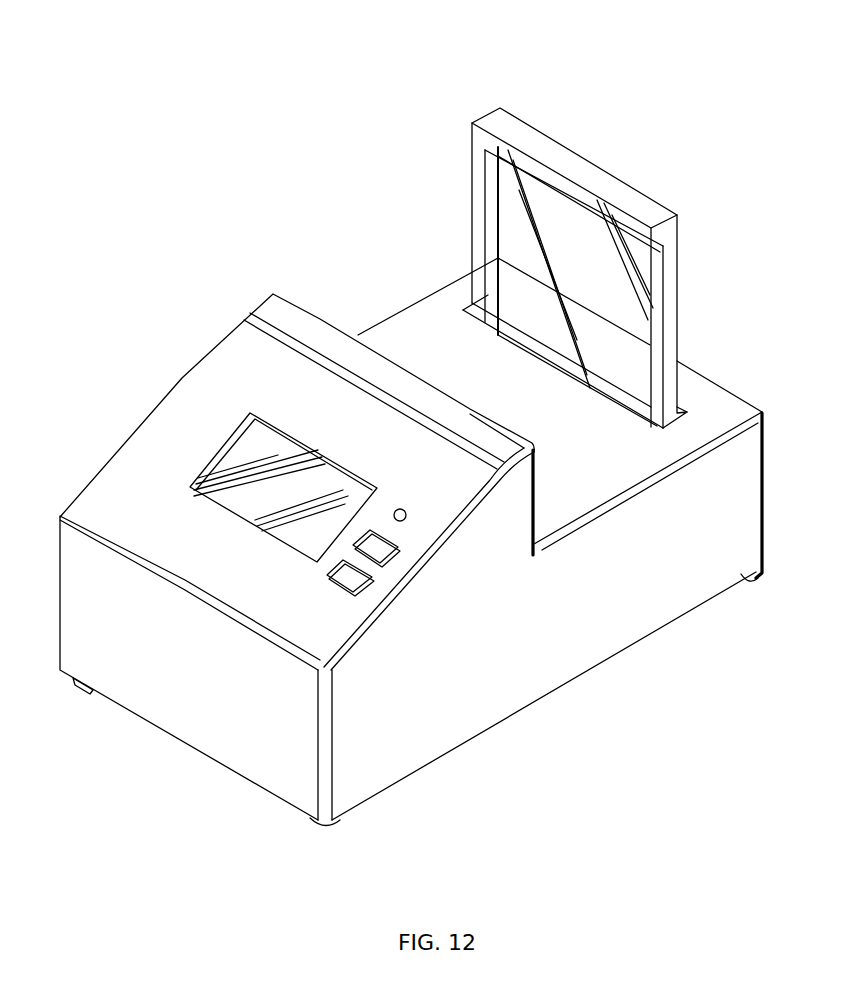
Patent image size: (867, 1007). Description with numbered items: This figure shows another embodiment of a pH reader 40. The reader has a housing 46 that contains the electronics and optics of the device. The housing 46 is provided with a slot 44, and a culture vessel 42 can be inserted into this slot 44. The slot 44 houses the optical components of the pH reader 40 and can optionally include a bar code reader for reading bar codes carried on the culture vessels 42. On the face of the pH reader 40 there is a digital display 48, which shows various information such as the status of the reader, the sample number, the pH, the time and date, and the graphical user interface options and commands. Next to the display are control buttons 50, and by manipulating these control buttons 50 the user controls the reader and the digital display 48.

The pH reader 40 is at (343, 130).
The culture vessel 42 is at (643, 275).
The slot 44 is at (684, 404).
The housing 46 is at (684, 573).
The digital display 48 is at (243, 453).
The control buttons 50 is at (383, 547).